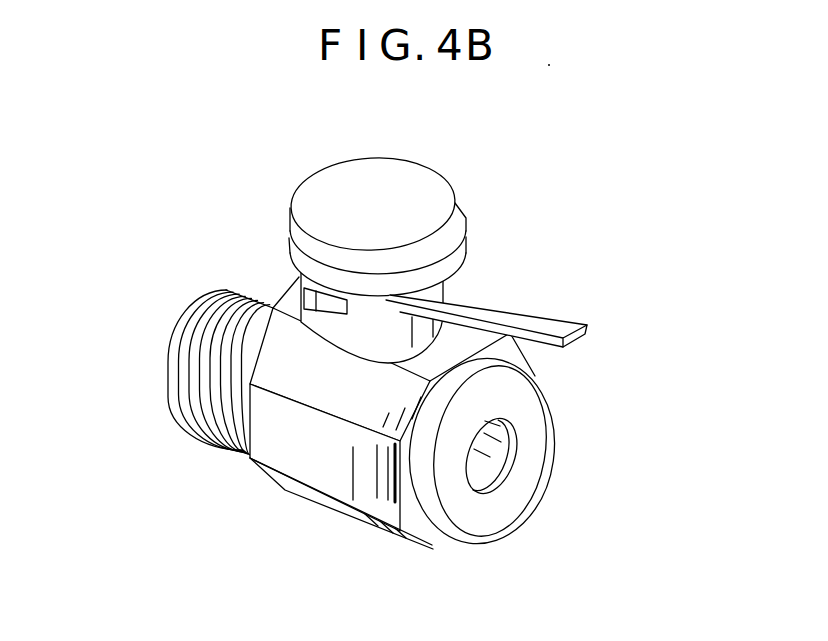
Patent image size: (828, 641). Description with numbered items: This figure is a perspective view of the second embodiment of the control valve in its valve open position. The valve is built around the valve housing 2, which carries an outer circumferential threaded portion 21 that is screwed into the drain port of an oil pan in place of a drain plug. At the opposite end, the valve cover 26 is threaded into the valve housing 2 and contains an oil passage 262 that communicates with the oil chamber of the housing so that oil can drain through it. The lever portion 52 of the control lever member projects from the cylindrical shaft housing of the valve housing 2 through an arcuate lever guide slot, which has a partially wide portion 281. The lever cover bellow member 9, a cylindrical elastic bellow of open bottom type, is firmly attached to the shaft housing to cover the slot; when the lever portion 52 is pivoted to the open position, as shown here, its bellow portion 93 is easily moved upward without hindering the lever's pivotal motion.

The valve housing 2 is at (348, 515).
The lever cover bellow member 9 is at (421, 178).
The outer circumferential threaded portion 21 is at (174, 358).
The valve cover 26 is at (527, 491).
The oil passage 262 is at (505, 446).
The partially wide portion 281 is at (299, 293).
The lever portion 52 is at (579, 321).
The bellow portion 93 is at (465, 248).